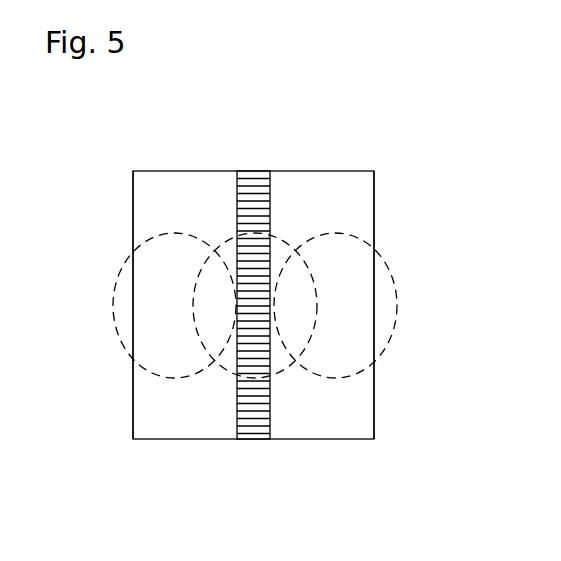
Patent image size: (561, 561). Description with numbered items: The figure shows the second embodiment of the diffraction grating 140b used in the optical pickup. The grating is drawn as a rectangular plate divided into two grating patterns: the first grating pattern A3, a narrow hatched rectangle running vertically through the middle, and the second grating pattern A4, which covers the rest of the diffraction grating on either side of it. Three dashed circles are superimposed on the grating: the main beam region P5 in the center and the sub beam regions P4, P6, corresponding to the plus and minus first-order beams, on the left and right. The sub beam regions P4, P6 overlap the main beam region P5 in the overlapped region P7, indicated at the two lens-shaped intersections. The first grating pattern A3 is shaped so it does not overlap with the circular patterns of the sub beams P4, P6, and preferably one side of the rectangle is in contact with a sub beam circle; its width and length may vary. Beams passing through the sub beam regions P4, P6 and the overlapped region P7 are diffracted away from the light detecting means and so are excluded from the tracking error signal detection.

The diffraction grating 140b is at (323, 170).
The second grating pattern A4 is at (187, 181).
The first grating pattern A3 is at (255, 179).
The sub beam region P4 is at (140, 310).
The main beam region P5 is at (238, 211).
The sub beam region P6 is at (368, 309).
The overlapped region P7 is at (293, 313).